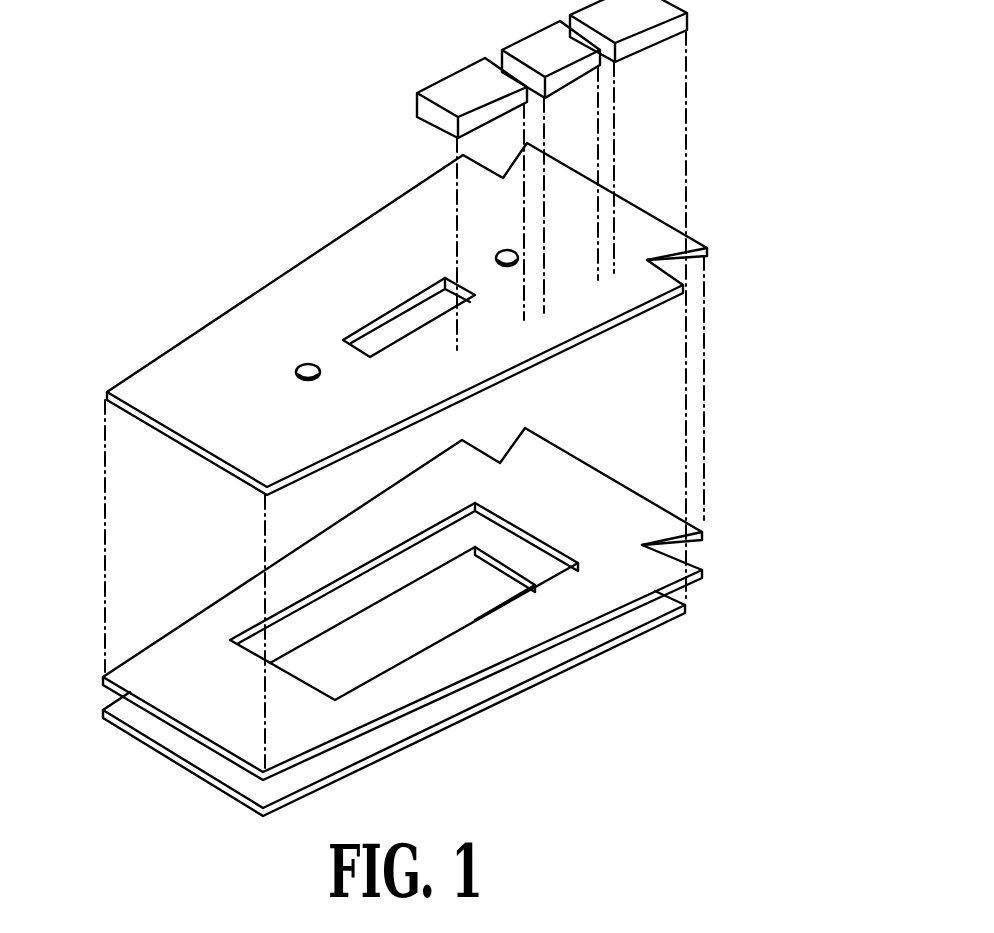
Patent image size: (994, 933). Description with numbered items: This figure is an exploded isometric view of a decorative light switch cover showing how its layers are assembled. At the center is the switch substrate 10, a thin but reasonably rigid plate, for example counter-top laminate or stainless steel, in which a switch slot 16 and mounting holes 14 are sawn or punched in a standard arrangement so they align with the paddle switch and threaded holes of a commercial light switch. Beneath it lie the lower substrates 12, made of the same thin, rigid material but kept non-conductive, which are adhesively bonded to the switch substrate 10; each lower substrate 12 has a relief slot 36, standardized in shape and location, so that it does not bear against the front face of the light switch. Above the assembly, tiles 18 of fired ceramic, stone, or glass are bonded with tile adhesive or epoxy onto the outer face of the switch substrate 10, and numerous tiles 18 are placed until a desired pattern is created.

The switch substrate 10 is at (685, 287).
The lower substrates 12 is at (700, 535).
The mounting holes 14 is at (496, 255).
The switch slot 16 is at (400, 333).
The tiles 18 is at (567, 75).
The relief slot 36 is at (270, 622).